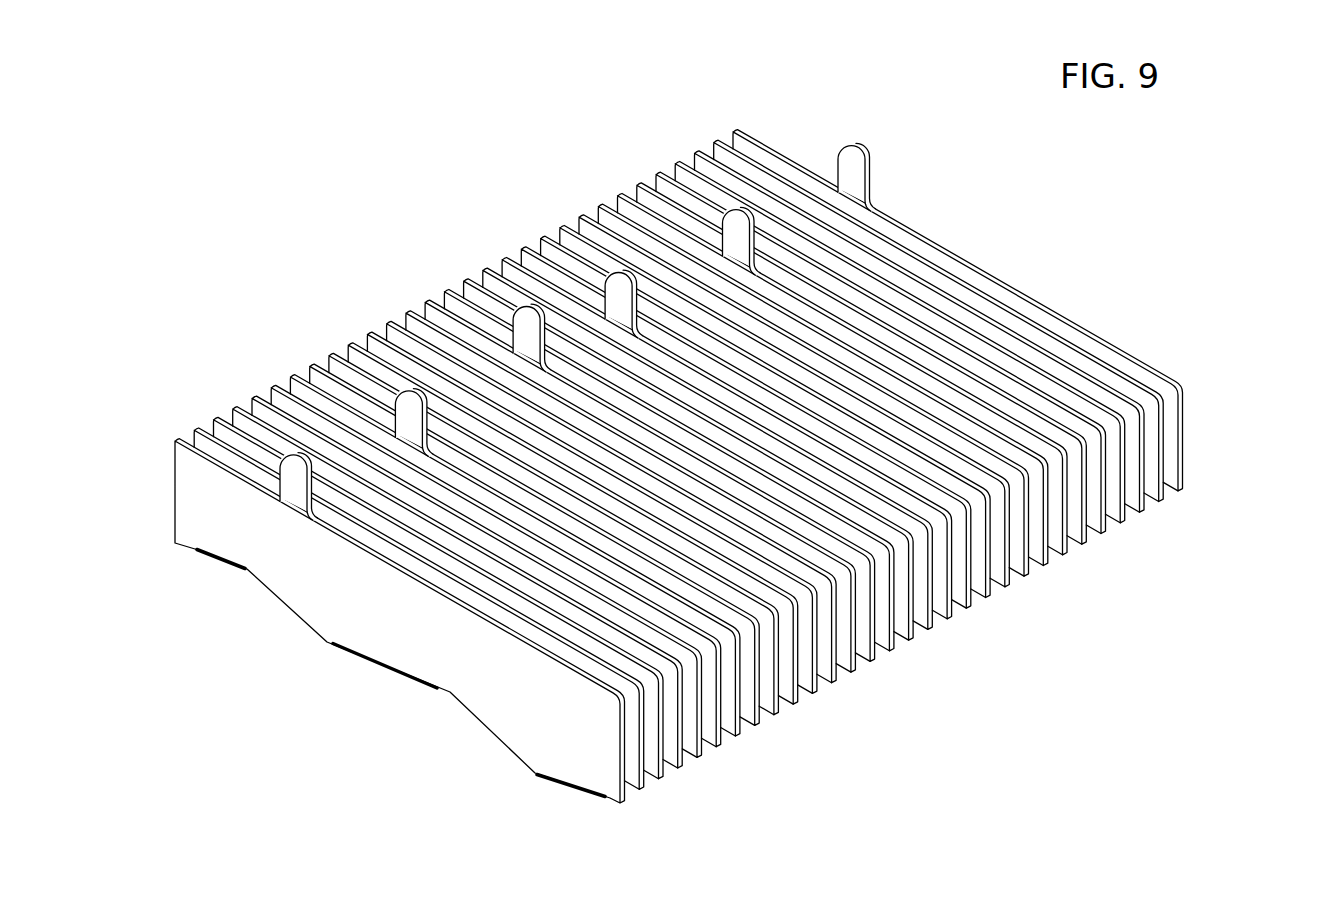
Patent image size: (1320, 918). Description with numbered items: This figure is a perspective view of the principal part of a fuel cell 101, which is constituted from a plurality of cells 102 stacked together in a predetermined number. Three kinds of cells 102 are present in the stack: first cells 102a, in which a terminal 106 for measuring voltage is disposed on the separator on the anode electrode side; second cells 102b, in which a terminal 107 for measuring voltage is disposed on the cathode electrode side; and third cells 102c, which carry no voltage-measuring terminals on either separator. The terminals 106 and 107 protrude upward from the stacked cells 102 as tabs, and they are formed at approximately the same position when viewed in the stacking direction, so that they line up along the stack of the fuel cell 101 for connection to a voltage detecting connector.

The fuel cell 101 is at (1107, 276).
The cell 102 is at (733, 482).
The first cell 102a is at (1187, 490).
The second cell 102b is at (617, 803).
The third cell 102c is at (1131, 520).
The terminal 106 is at (732, 218).
The terminal 107 is at (410, 403).